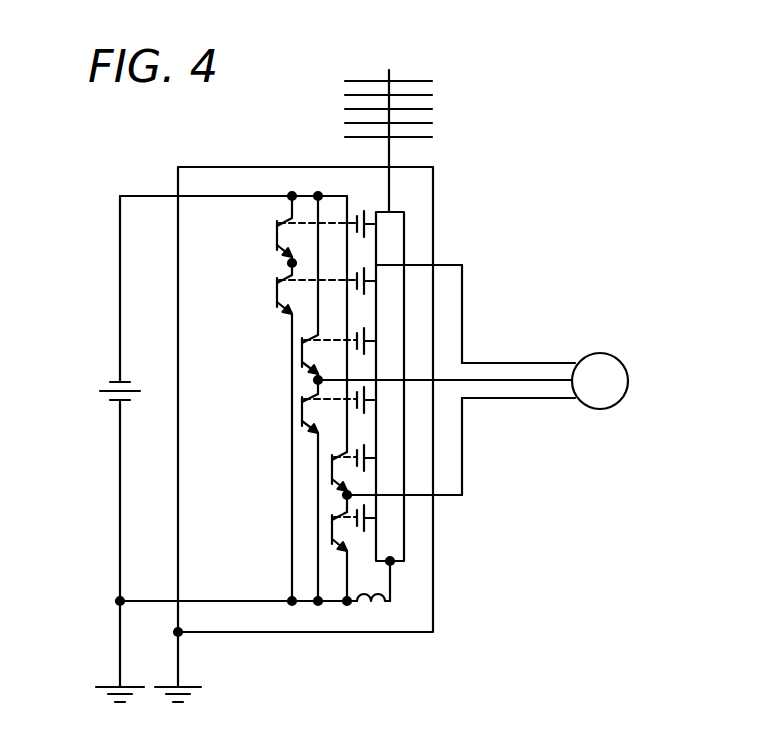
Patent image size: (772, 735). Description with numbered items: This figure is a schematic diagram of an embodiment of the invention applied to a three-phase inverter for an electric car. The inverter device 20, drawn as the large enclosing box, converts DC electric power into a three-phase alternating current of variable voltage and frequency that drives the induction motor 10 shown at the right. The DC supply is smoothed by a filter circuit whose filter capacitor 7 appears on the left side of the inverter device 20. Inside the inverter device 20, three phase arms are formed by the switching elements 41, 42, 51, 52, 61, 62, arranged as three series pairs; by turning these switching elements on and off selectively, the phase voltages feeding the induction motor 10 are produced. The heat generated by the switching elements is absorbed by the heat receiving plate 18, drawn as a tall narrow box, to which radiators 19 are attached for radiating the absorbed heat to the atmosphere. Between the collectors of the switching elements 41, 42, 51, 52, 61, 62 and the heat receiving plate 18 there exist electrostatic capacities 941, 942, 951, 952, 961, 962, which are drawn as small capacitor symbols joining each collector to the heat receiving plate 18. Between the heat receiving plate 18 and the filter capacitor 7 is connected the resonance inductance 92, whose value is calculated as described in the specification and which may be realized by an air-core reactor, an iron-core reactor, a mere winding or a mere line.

The filter capacitor 7 is at (100, 397).
The induction motor 10 is at (600, 353).
The heat receiving plate 18 is at (404, 212).
The radiator 19 is at (389, 70).
The inverter device 20 is at (178, 167).
The switching element 41 is at (276, 240).
The switching element 42 is at (276, 300).
The switching element 51 is at (300, 355).
The switching element 52 is at (300, 413).
The switching element 61 is at (330, 470).
The switching element 62 is at (330, 531).
The resonance inductance 92 is at (375, 610).
The electrostatic capacity 941 is at (365, 211).
The electrostatic capacity 942 is at (365, 270).
The electrostatic capacity 951 is at (366, 328).
The electrostatic capacity 952 is at (367, 389).
The electrostatic capacity 961 is at (367, 446).
The electrostatic capacity 962 is at (364, 523).